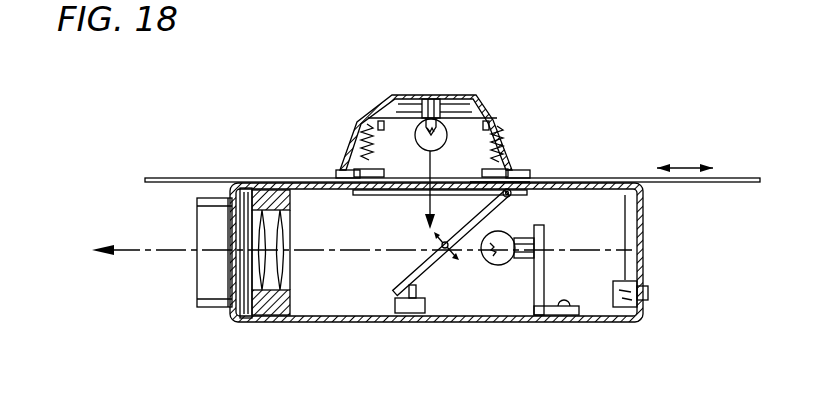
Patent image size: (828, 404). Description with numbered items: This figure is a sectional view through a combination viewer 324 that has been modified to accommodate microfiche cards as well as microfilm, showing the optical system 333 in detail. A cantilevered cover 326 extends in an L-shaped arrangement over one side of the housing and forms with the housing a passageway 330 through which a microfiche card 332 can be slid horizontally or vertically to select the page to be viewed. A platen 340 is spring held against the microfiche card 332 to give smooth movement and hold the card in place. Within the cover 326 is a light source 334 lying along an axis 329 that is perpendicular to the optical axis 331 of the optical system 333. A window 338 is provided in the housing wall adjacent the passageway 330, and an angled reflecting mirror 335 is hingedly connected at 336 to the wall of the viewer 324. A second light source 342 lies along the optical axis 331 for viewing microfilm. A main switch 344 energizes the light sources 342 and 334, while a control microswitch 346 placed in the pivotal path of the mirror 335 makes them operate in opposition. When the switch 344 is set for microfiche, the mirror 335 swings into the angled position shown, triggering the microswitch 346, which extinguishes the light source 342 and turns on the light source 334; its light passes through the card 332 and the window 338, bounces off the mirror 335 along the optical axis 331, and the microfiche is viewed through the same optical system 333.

The viewer 324 is at (660, 208).
The cantilevered cover 326 is at (474, 100).
The axis 329 is at (430, 204).
The passageway 330 is at (391, 179).
The optical axis 331 is at (322, 255).
The microfiche card 332 is at (172, 176).
The optical system 333 is at (255, 330).
The light source 334 is at (430, 99).
The angled reflecting mirror 335 is at (446, 268).
The hinge connection 336 is at (512, 196).
The window 338 is at (467, 182).
The platen 340 is at (463, 165).
The light source 342 is at (501, 268).
The main switch 344 is at (621, 307).
The control microswitch 346 is at (411, 303).